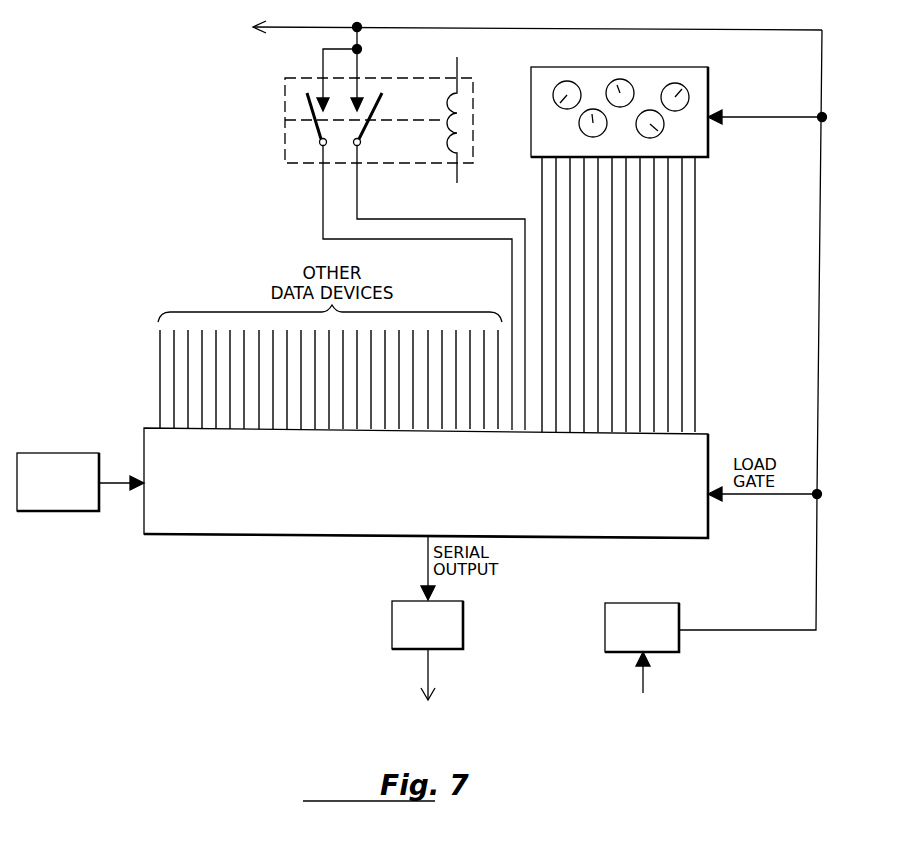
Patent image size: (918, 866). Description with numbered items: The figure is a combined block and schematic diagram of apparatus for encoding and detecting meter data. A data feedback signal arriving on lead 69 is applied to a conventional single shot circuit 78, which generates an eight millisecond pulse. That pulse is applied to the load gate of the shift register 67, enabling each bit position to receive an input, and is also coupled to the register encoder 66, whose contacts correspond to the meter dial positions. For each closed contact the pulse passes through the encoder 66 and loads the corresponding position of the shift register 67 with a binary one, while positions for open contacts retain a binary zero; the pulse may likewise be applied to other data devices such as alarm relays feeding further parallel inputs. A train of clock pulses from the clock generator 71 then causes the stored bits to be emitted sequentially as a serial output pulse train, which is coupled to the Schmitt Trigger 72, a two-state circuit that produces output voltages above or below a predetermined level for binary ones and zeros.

The register encoder 66 is at (699, 94).
The shift register 67 is at (440, 492).
The clock generator 71 is at (45, 491).
The Schmitt Trigger 72 is at (416, 633).
The single shot circuit 78 is at (630, 635).
The data feedback lead 69 is at (640, 677).